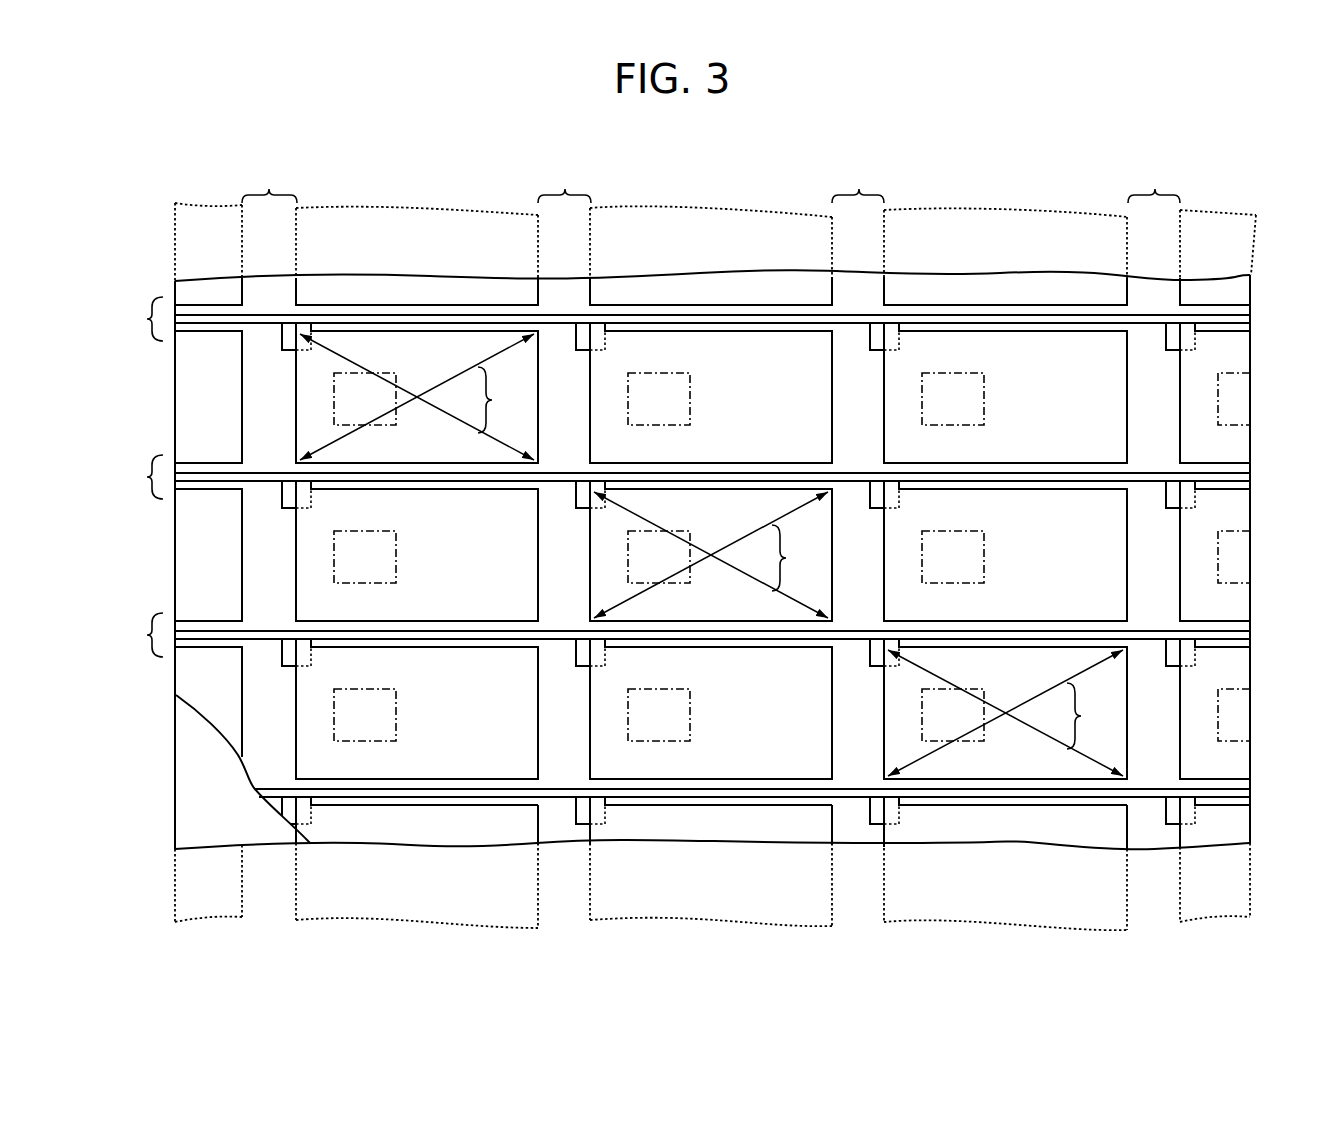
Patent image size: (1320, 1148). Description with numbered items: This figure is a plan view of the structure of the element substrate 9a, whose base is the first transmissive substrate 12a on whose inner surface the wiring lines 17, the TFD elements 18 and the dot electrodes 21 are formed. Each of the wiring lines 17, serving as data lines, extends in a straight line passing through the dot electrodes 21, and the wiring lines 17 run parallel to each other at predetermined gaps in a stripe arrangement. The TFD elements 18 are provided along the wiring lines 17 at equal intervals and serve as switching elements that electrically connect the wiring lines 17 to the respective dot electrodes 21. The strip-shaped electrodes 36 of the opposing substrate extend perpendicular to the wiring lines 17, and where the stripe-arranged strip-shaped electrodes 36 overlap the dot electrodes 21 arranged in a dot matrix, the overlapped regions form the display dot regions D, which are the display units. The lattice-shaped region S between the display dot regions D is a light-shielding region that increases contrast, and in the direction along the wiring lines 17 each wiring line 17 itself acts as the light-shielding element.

The element substrate 9a is at (189, 188).
The first transmissive substrate 12a is at (190, 768).
The wiring line 17 is at (1252, 321).
The TFD element 18 is at (278, 338).
The dot electrode 21 is at (442, 448).
The strip-shaped electrode 36 is at (400, 205).
The light-shielding region S is at (655, 408).
The display dot region D is at (791, 558).